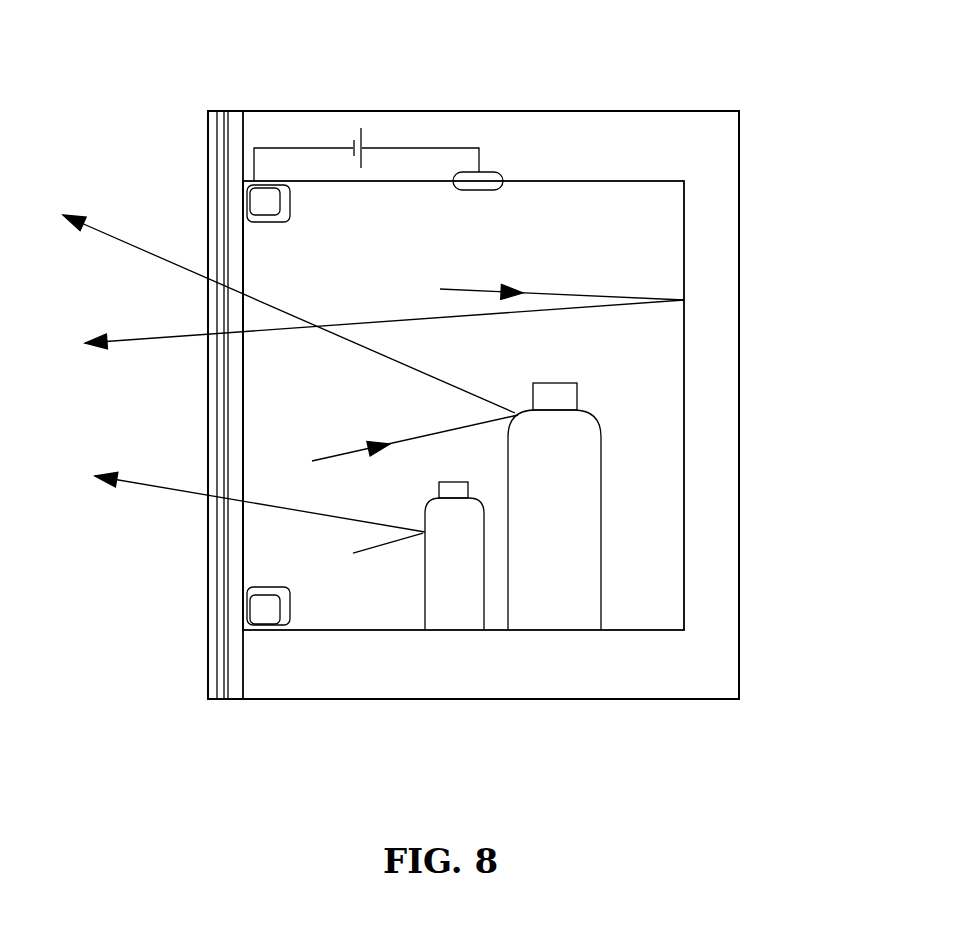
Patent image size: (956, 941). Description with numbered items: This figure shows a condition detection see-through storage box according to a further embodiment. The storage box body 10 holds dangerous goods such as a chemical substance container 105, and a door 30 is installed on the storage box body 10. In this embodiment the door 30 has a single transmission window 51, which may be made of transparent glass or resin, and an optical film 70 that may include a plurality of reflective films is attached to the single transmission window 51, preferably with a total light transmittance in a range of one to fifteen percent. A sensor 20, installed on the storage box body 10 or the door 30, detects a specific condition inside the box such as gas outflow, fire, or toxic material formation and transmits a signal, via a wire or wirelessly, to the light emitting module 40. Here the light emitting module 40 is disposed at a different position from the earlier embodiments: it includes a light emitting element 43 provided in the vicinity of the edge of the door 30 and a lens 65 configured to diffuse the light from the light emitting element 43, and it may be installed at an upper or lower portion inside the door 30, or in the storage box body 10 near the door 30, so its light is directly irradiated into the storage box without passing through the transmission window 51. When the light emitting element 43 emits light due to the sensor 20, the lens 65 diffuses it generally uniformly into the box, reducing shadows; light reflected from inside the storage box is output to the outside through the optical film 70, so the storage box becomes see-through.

The storage box body 10 is at (700, 135).
The sensor 20 is at (497, 172).
The door 30 is at (207, 370).
The light emitting module 40 is at (235, 503).
The light emitting element 43 is at (253, 625).
The transmission window 51 is at (237, 110).
The lens 65 is at (290, 598).
The optical film 70 is at (217, 110).
The chemical substance container 105 is at (562, 547).